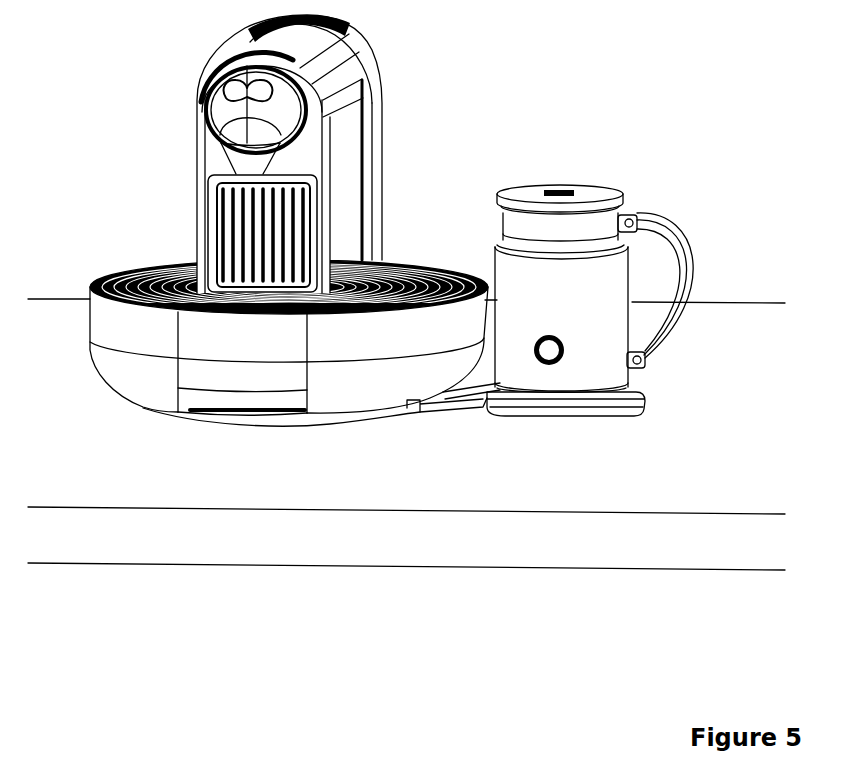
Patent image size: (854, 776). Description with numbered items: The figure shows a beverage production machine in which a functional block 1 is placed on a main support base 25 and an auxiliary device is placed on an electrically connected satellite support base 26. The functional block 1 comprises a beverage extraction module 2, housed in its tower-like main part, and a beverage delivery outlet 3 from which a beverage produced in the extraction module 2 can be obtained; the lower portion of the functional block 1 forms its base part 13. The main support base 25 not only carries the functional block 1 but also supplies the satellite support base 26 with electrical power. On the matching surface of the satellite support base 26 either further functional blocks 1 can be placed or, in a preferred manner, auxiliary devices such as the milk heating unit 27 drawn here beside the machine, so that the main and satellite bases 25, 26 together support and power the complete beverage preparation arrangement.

The functional block 1 is at (390, 130).
The beverage extraction module 2 is at (373, 68).
The beverage delivery outlet 3 is at (222, 156).
The base part 13 is at (82, 360).
The main support base 25 is at (330, 424).
The satellite support base 26 is at (568, 417).
The milk heating unit 27 is at (625, 192).